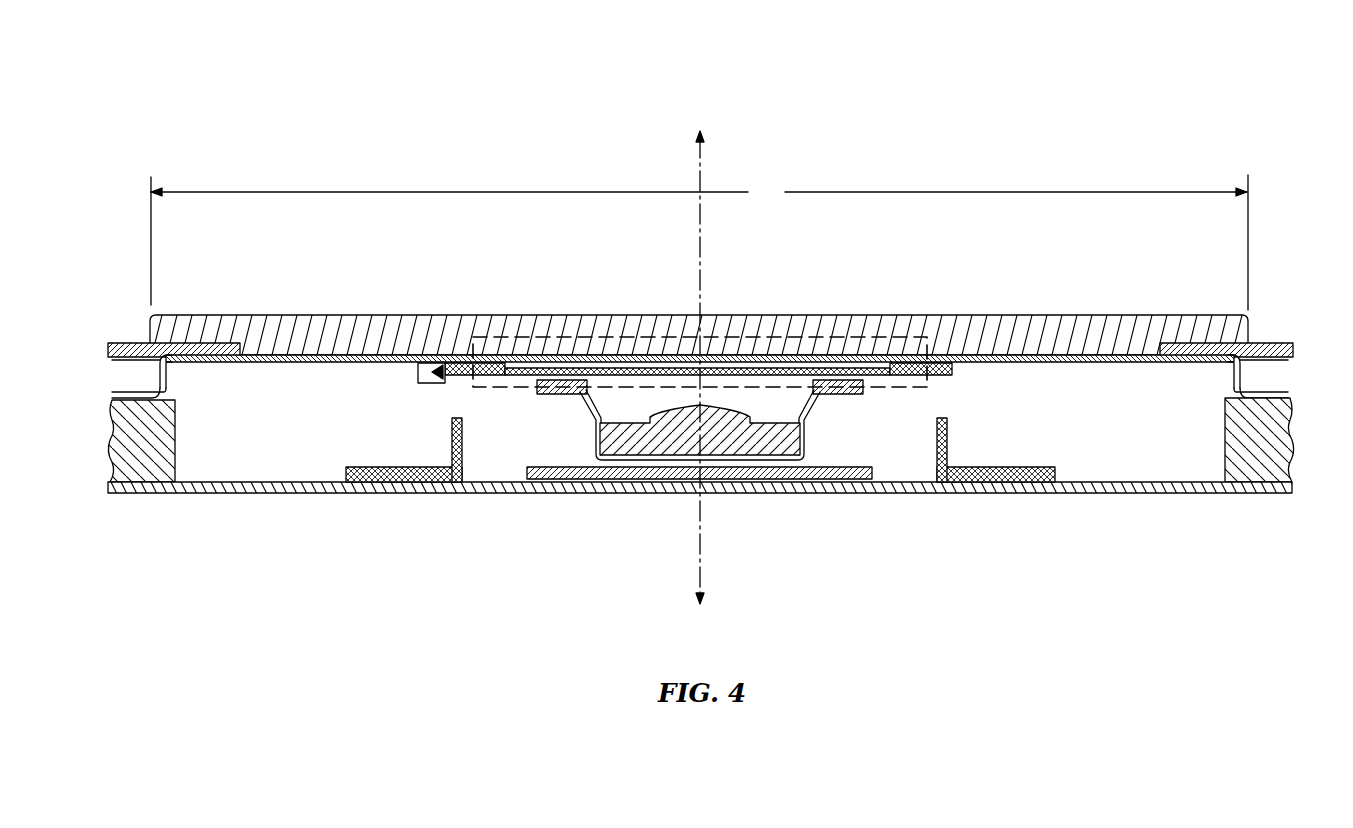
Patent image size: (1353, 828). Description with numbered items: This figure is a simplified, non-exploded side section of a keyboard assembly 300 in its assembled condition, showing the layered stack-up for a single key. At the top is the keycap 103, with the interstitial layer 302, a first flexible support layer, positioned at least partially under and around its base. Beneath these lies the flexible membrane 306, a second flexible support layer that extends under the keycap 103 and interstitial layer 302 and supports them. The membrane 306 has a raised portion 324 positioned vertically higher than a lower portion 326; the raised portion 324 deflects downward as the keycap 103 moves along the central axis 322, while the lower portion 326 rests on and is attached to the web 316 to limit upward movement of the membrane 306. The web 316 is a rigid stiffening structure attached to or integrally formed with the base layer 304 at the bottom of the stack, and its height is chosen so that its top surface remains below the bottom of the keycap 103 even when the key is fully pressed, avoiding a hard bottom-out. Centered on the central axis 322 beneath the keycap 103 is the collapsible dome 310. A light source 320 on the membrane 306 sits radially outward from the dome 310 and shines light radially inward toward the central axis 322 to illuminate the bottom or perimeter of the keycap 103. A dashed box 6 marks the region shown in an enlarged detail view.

The keyboard assembly 300 is at (1142, 99).
The keycap 103 is at (277, 323).
The interstitial layer 302 is at (1268, 342).
The raised portion 324 is at (1093, 360).
The lower portion 326 is at (140, 392).
The flexible membrane 306 is at (724, 471).
The web 316 is at (168, 437).
The base layer 304 is at (1132, 493).
The light source 320 is at (415, 369).
The collapsible dome 310 is at (810, 443).
The box 6 is at (552, 333).
The central axis 322 is at (700, 153).